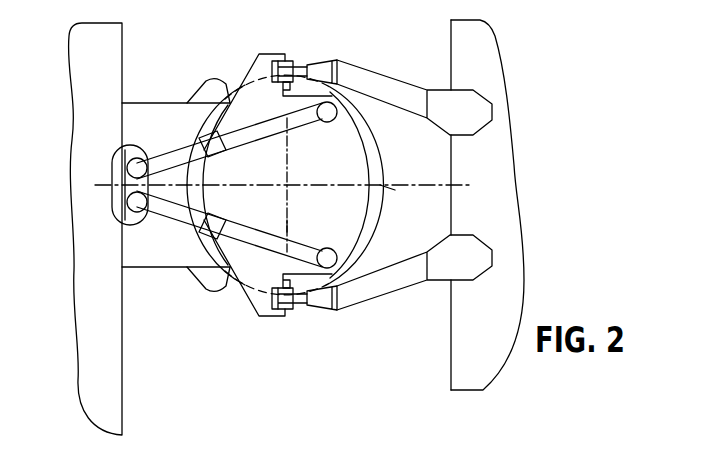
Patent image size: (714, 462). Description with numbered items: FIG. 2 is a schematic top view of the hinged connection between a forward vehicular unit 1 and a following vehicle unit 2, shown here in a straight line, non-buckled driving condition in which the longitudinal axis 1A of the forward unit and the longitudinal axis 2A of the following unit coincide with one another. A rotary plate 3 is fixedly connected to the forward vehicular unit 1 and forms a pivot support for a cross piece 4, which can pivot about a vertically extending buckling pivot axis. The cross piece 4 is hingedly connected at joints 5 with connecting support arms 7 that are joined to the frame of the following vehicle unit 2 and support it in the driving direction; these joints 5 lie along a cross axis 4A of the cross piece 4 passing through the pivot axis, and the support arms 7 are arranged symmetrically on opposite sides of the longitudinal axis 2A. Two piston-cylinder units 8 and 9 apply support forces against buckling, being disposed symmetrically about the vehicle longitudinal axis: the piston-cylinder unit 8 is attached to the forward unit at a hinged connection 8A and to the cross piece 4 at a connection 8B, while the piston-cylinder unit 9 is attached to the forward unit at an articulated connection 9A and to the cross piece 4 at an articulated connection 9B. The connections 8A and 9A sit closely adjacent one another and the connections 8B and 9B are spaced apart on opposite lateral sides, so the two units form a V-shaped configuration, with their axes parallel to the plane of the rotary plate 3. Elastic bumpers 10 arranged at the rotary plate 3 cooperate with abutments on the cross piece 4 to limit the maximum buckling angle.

The forward vehicular unit 1 is at (110, 48).
The longitudinal axis 1A is at (114, 188).
The following vehicle unit 2 is at (486, 46).
The longitudinal axis 2A is at (392, 185).
The rotary plate 3 is at (378, 163).
The cross piece 4 is at (327, 177).
The cross axis 4A is at (288, 226).
The joints 5 is at (280, 52).
The connecting support arms 7 is at (373, 78).
The piston-cylinder unit 8 is at (164, 157).
The hinged connection 8A is at (125, 151).
The connection 8B is at (322, 105).
The piston-cylinder unit 9 is at (175, 213).
The articulated connection 9A is at (125, 222).
The articulated connection 9B is at (323, 268).
The elastic bumpers 10 is at (212, 83).